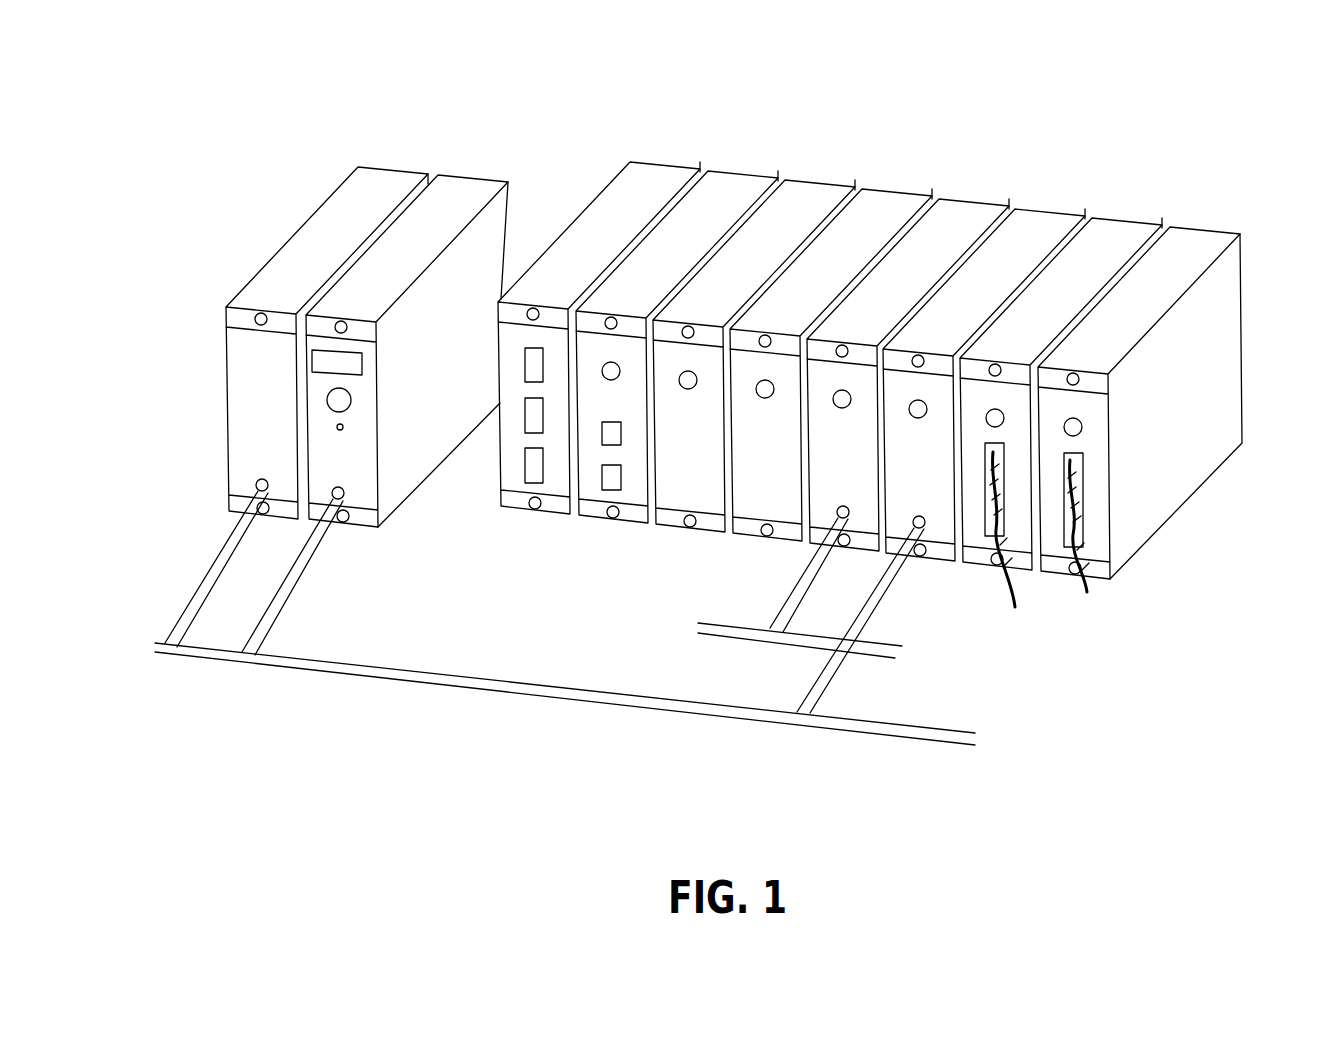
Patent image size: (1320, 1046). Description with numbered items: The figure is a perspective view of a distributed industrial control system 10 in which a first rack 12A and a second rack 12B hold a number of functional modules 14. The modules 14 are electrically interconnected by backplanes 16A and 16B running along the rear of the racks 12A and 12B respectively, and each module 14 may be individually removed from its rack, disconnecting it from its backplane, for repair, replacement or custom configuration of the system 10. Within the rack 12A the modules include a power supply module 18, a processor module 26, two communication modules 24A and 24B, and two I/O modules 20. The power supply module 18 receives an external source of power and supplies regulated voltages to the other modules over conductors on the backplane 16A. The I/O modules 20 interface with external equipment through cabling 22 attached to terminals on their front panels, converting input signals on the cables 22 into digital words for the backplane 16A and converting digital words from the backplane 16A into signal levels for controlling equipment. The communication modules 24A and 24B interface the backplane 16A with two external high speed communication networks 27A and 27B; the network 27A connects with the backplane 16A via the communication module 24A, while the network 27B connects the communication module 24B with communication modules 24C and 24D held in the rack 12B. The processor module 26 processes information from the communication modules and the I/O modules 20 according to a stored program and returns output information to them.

The distributed industrial control system 10 is at (729, 461).
The first rack 12A is at (1142, 508).
The second rack 12B is at (467, 420).
The functional modules 14 is at (321, 328).
The backplane 16A is at (887, 383).
The backplane 16B is at (384, 316).
The power supply module 18 is at (517, 483).
The I/O modules 20 is at (1013, 423).
The cabling 22 is at (1015, 607).
The communication module 24A is at (688, 352).
The communication module 24B is at (935, 390).
The communication module 24C is at (250, 452).
The communication module 24D is at (355, 495).
The processor module 26 is at (595, 490).
The high speed communication network 27A is at (707, 623).
The high speed communication network 27B is at (393, 670).